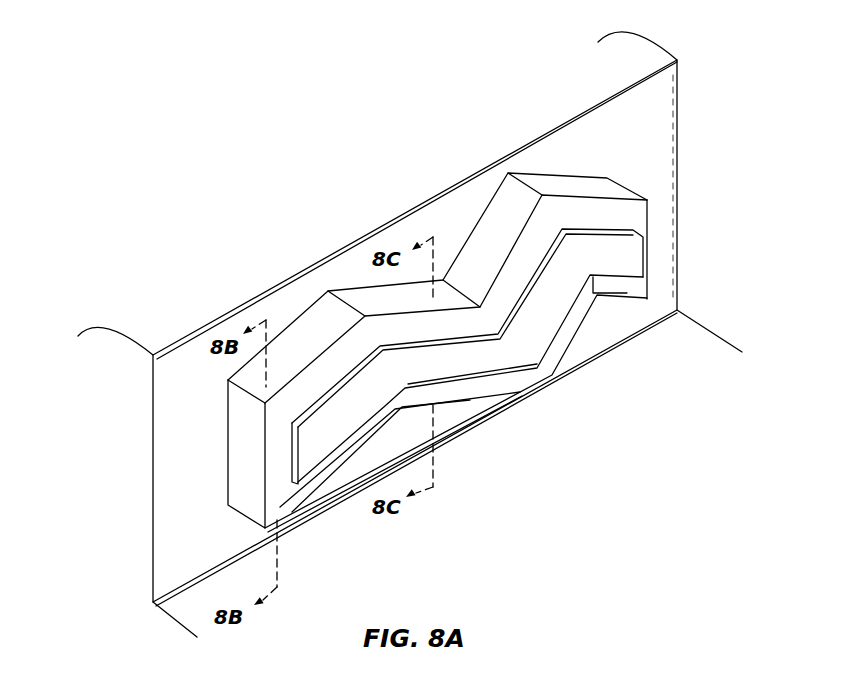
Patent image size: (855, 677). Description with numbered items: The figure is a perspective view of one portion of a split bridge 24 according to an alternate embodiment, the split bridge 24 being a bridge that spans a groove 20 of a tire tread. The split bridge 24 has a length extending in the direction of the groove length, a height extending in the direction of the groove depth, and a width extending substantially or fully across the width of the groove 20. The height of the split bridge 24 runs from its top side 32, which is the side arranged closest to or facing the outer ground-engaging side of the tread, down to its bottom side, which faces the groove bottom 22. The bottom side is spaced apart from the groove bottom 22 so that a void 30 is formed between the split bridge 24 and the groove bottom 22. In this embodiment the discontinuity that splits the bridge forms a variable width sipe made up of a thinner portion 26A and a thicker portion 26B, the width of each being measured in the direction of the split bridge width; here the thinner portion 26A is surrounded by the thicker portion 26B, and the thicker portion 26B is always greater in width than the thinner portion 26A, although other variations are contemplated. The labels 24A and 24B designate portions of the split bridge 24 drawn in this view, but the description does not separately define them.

The groove 20 is at (660, 90).
The groove bottom 22 is at (623, 400).
The split bridge 24 is at (648, 180).
The upper surface of protrusion 24A is at (591, 186).
The lower portion of protrusion 24B is at (487, 368).
The thinner portion 26A is at (634, 223).
The thicker portion 26B is at (628, 267).
The void 30 is at (641, 350).
The top side 32 is at (318, 317).